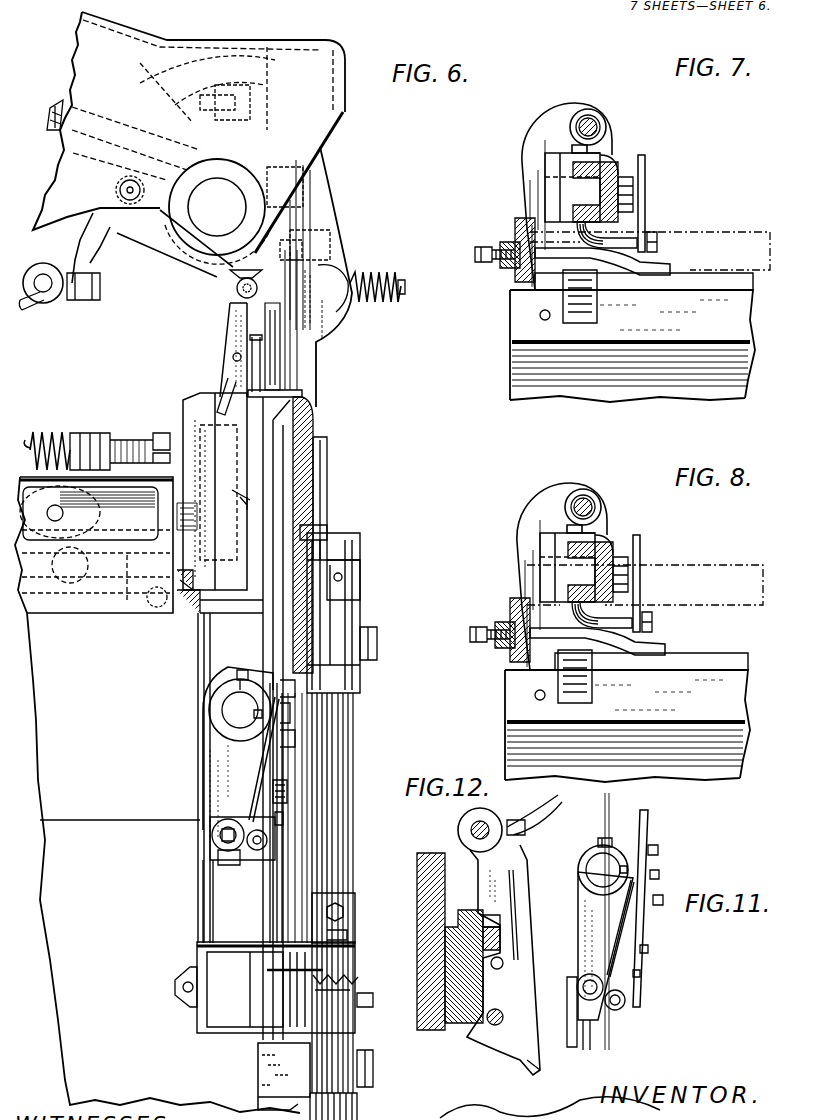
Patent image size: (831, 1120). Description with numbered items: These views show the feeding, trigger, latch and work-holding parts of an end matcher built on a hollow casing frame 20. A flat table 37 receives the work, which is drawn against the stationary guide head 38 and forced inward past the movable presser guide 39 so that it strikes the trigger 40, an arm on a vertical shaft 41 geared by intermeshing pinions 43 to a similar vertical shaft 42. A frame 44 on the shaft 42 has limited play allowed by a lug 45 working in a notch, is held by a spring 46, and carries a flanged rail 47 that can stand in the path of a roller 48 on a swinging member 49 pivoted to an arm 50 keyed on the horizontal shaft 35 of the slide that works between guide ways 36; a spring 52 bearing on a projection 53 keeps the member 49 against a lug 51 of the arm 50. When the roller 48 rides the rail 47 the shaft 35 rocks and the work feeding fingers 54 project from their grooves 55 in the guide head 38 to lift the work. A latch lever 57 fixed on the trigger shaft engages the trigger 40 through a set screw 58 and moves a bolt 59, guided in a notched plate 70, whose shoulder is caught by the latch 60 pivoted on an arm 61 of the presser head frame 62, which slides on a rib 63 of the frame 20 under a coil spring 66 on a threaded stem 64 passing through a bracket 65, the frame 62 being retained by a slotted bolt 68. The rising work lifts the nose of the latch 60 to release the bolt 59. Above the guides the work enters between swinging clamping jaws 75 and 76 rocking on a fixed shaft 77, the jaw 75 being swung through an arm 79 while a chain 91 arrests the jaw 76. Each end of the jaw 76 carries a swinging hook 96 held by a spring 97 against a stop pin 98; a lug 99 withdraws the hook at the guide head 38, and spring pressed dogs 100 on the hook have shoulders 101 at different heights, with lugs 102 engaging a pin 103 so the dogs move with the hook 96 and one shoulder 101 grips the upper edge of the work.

In FIG. 6, the frame 20 is at (323, 127).
In FIG. 7, the frame 20 is at (737, 373).
In FIG. 8, the frame 20 is at (644, 726).
In FIG. 6, the horizontal shaft 35 is at (235, 713).
In FIG. 11, the horizontal shaft 35 is at (600, 867).
In FIG. 6, the guide ways 36 is at (303, 860).
In FIG. 6, the table 37 is at (253, 603).
In FIG. 7, the table 37 is at (750, 287).
In FIG. 8, the table 37 is at (660, 664).
In FIG. 6, the stationary guide head 38 is at (300, 418).
In FIG. 6, the presser guide 39 is at (217, 437).
In FIG. 6, the trigger 40 is at (360, 548).
In FIG. 7, the trigger 40 is at (517, 227).
In FIG. 8, the trigger 40 is at (503, 608).
In FIG. 6, the vertical shaft 41 is at (340, 537).
In FIG. 6, the vertical shaft 42 is at (340, 753).
In FIG. 6, the intermeshing pinions 43 is at (357, 1110).
In FIG. 6, the frame 44 is at (230, 947).
In FIG. 6, the lug 45 is at (340, 935).
In FIG. 6, the spring 46 is at (350, 980).
In FIG. 6, the flanged rail 47 is at (213, 900).
In FIG. 11, the flanged rail 47 is at (563, 1050).
In FIG. 6, the roller 48 is at (243, 855).
In FIG. 11, the roller 48 is at (583, 983).
In FIG. 6, the swinging member 49 is at (227, 817).
In FIG. 11, the swinging member 49 is at (603, 1020).
In FIG. 6, the arm 50 is at (230, 760).
In FIG. 11, the arm 50 is at (583, 930).
In FIG. 6, the lug 51 is at (220, 883).
In FIG. 11, the lug 51 is at (590, 1033).
In FIG. 6, the spring 52 is at (283, 763).
In FIG. 11, the spring 52 is at (640, 1000).
In FIG. 6, the projection 53 is at (283, 813).
In FIG. 6, the work feeding fingers 54 is at (285, 433).
In FIG. 11, the work feeding fingers 54 is at (647, 820).
In FIG. 6, the grooves 55 is at (293, 467).
In FIG. 6, the latch lever 57 is at (353, 577).
In FIG. 7, the latch lever 57 is at (505, 268).
In FIG. 8, the latch lever 57 is at (493, 615).
In FIG. 7, the set screw 58 is at (477, 253).
In FIG. 8, the set screw 58 is at (473, 628).
In FIG. 6, the bolt 59 is at (180, 592).
In FIG. 7, the bolt 59 is at (690, 270).
In FIG. 8, the bolt 59 is at (625, 637).
In FIG. 6, the latch 60 is at (247, 503).
In FIG. 7, the latch 60 is at (645, 190).
In FIG. 8, the latch 60 is at (648, 581).
In FIG. 7, the arm 61 is at (627, 227).
In FIG. 8, the arm 61 is at (629, 603).
In FIG. 7, the presser head frame 62 is at (610, 160).
In FIG. 8, the presser head frame 62 is at (613, 554).
In FIG. 7, the rib 63 is at (580, 183).
In FIG. 8, the rib 63 is at (539, 558).
In FIG. 7, the threaded stem 64 is at (597, 128).
In FIG. 8, the threaded stem 64 is at (608, 493).
In FIG. 7, the bracket 65 is at (543, 123).
In FIG. 8, the bracket 65 is at (562, 564).
In FIG. 6, the coil spring 66 is at (47, 433).
In FIG. 7, the coil spring 66 is at (588, 110).
In FIG. 8, the coil spring 66 is at (587, 486).
In FIG. 6, the bolt 68 is at (367, 270).
In FIG. 7, the bolt 68 is at (645, 173).
In FIG. 8, the bolt 68 is at (666, 583).
In FIG. 6, the plate 70 is at (213, 603).
In FIG. 6, the jaw member 75 is at (330, 322).
In FIG. 6, the jaw member 76 is at (217, 287).
In FIG. 6, the fixed rod or shaft 77 is at (227, 193).
In FIG. 6, the arm 79 is at (55, 105).
In FIG. 6, the chain 91 is at (23, 302).
In FIG. 6, the swinging hook 96 is at (228, 367).
In FIG. 12, the swinging hook 96 is at (500, 1043).
In FIG. 6, the spring 97 is at (170, 250).
In FIG. 12, the spring 97 is at (533, 807).
In FIG. 6, the stop pin 98 is at (222, 395).
In FIG. 12, the stop pin 98 is at (503, 1017).
In FIG. 12, the lug 99 is at (537, 1070).
In FIG. 12, the spring pressed dogs 100 is at (513, 880).
In FIG. 6, the shoulder 101 is at (262, 333).
In FIG. 12, the shoulder 101 is at (493, 917).
In FIG. 12, the lug 102 is at (500, 940).
In FIG. 12, the pin 103 is at (503, 967).